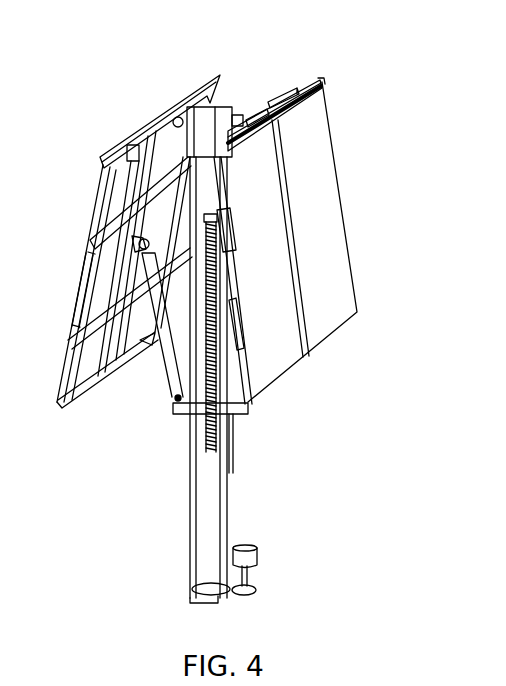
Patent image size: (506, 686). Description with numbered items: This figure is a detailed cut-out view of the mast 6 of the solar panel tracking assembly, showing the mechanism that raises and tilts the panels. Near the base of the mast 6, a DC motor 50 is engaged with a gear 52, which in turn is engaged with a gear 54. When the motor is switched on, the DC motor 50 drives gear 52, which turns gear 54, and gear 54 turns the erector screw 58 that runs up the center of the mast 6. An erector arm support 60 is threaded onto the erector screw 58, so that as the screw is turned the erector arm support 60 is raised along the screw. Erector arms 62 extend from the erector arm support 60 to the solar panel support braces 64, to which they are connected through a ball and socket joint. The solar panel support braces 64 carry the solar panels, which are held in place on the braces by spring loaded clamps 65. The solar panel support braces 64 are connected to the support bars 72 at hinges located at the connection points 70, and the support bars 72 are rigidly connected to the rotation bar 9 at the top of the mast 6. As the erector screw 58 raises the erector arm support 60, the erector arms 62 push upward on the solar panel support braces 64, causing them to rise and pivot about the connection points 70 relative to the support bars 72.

The mast 6 is at (232, 500).
The rotation bar 9 is at (175, 122).
The DC motor 50 is at (263, 561).
The gear 52 is at (257, 595).
The gear 54 is at (193, 598).
The erector screw 58 is at (207, 523).
The erector arm support 60 is at (240, 415).
The erector arm 62 is at (165, 370).
The solar panel support brace 64 is at (120, 205).
The spring loaded clamp 65 is at (70, 328).
The connection point 70 is at (122, 150).
The support bar 72 is at (190, 97).